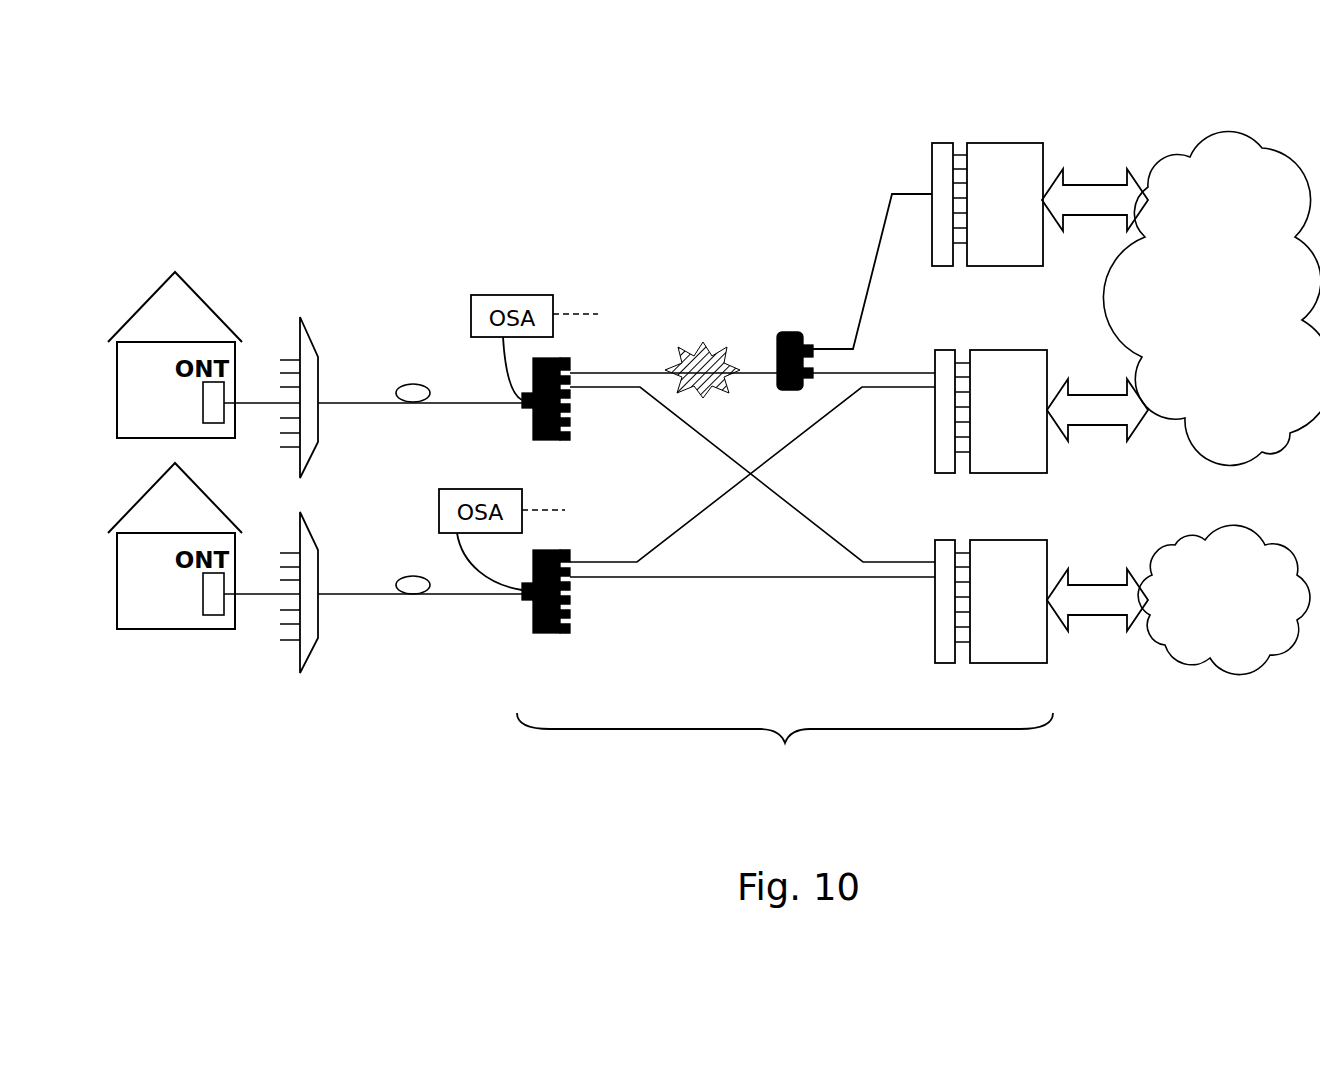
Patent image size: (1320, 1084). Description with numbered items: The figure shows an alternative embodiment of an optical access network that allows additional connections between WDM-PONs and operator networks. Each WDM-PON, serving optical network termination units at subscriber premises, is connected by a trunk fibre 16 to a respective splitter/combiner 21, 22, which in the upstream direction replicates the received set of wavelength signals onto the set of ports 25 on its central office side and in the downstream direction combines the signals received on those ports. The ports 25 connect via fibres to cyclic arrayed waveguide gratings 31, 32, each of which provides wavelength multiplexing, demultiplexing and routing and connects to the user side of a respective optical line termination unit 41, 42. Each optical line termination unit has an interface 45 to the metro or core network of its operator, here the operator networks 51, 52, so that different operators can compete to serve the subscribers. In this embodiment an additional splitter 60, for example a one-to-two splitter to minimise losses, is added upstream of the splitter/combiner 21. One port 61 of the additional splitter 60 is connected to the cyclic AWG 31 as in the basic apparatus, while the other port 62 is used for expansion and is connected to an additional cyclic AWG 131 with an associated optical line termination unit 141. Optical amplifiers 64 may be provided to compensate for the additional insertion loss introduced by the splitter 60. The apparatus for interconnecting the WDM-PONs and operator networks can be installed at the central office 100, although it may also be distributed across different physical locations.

The trunk fibre 16 is at (367, 403).
The splitter/combiner 21 is at (562, 357).
The splitter/combiner 22 is at (561, 549).
The ports on CO side of splitter/combiner 25 is at (575, 371).
The cyclic arrayed waveguide grating 31 is at (940, 350).
The cyclic arrayed waveguide grating 32 is at (941, 540).
The additional N×N cyclic AWG 131 is at (941, 143).
The optical line termination unit 41 is at (1012, 350).
The optical line termination unit 42 is at (1047, 548).
The associated OLT 141 is at (1010, 143).
The interface 45 is at (1098, 397).
The operator network 51 is at (1211, 298).
The operator network 52 is at (1224, 599).
The additional splitter 60 is at (790, 332).
The port of additional splitter 61 is at (813, 372).
The other port of additional splitter 62 is at (813, 349).
The optical amplifier 64 is at (695, 345).
The central office 100 is at (785, 746).